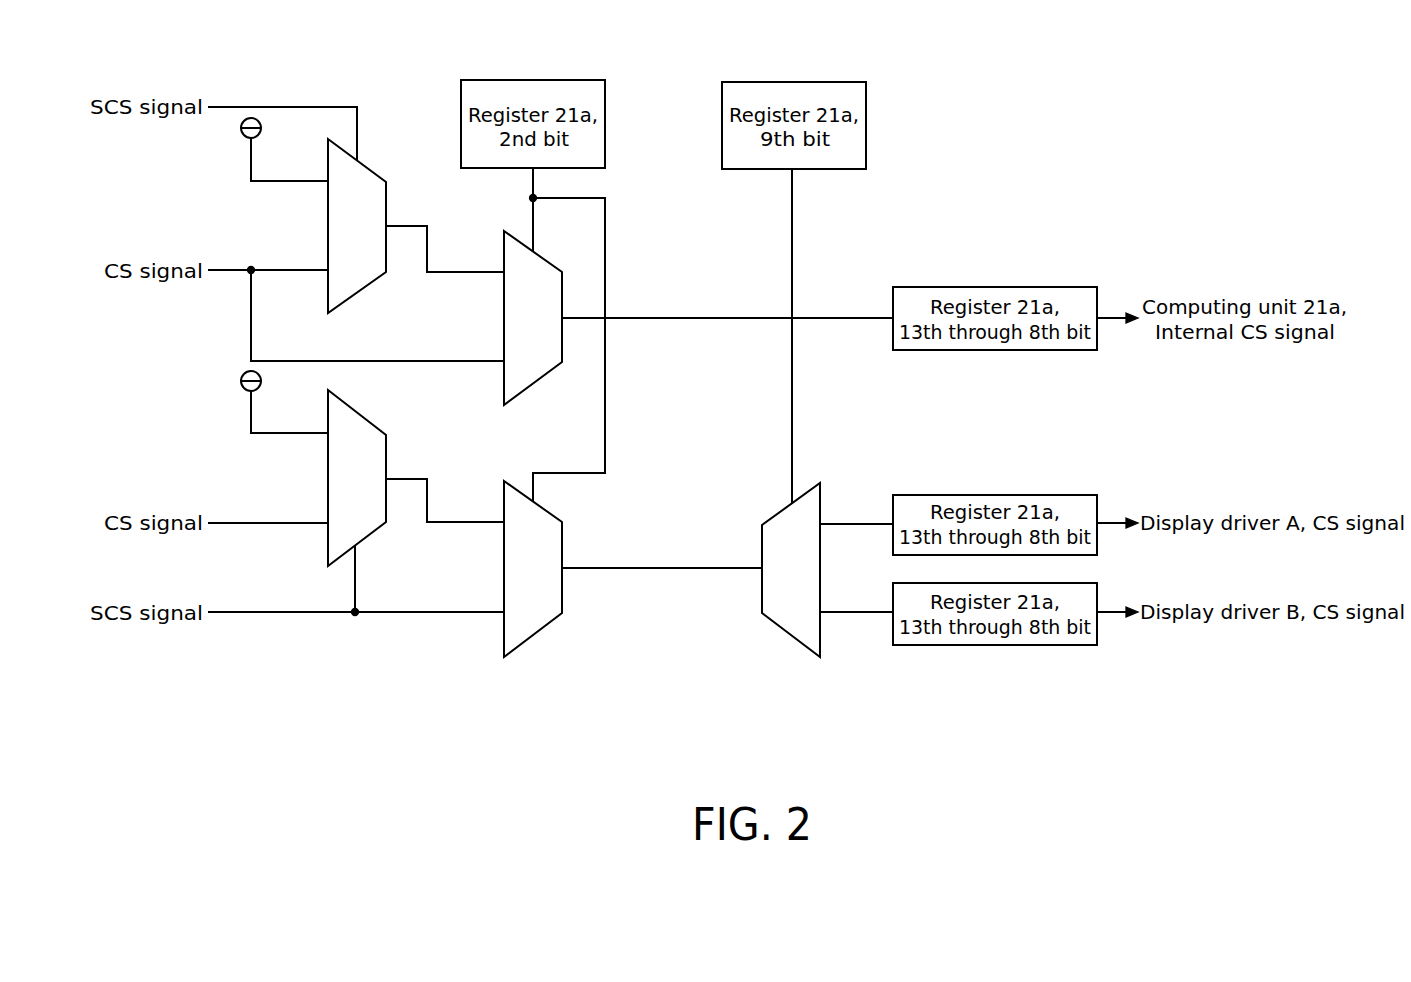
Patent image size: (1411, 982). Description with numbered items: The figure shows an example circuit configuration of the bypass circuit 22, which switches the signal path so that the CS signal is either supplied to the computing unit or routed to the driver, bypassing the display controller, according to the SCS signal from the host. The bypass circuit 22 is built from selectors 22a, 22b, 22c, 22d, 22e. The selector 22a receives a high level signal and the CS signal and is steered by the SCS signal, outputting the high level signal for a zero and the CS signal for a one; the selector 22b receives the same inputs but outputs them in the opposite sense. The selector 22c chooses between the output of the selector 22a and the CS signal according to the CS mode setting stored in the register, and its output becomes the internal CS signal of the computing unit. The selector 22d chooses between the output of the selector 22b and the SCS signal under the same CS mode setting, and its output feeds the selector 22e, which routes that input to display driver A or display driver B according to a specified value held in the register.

The bypass circuit 22 is at (265, 647).
The selector 22a is at (387, 202).
The selector 22b is at (387, 453).
The selector 22c is at (503, 385).
The selector 22d is at (503, 637).
The selector 22e is at (790, 637).